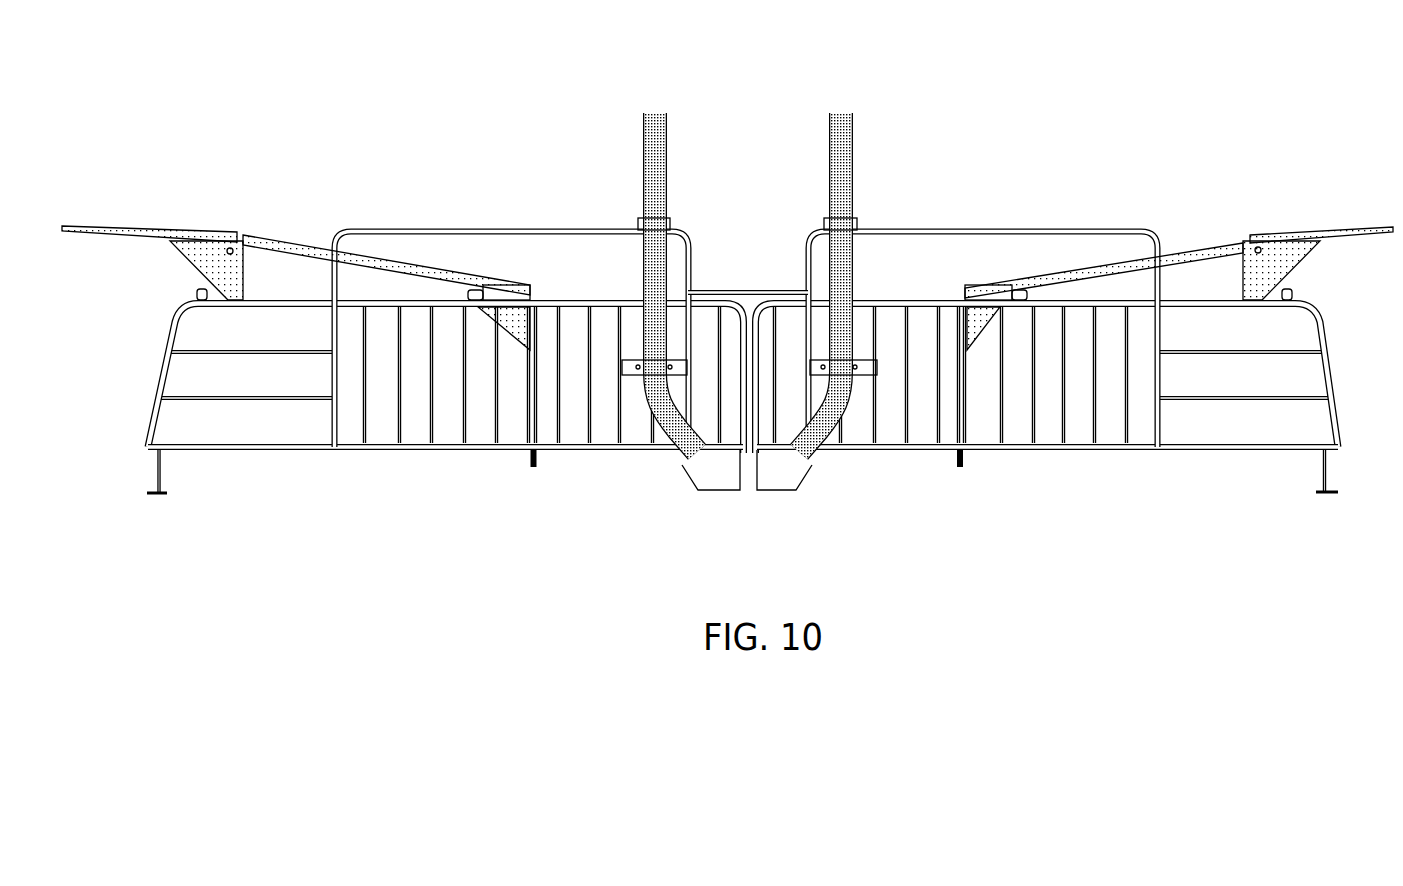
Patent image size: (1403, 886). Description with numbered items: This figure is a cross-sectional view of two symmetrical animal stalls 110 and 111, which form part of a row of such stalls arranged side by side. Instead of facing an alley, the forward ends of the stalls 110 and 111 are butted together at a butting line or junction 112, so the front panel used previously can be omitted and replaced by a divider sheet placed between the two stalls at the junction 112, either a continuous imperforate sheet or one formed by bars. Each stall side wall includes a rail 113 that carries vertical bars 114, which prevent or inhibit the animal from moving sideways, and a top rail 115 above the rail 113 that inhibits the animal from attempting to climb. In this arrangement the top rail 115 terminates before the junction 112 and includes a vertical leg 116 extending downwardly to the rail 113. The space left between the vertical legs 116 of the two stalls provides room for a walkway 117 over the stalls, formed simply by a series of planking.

The stall 110 is at (472, 139).
The stall 111 is at (1008, 145).
The junction 112 is at (747, 287).
The rail 113 is at (575, 297).
The vertical bars 114 is at (433, 397).
The top rail 115 is at (516, 228).
The vertical leg 116 is at (693, 264).
The walkway 117 is at (747, 300).